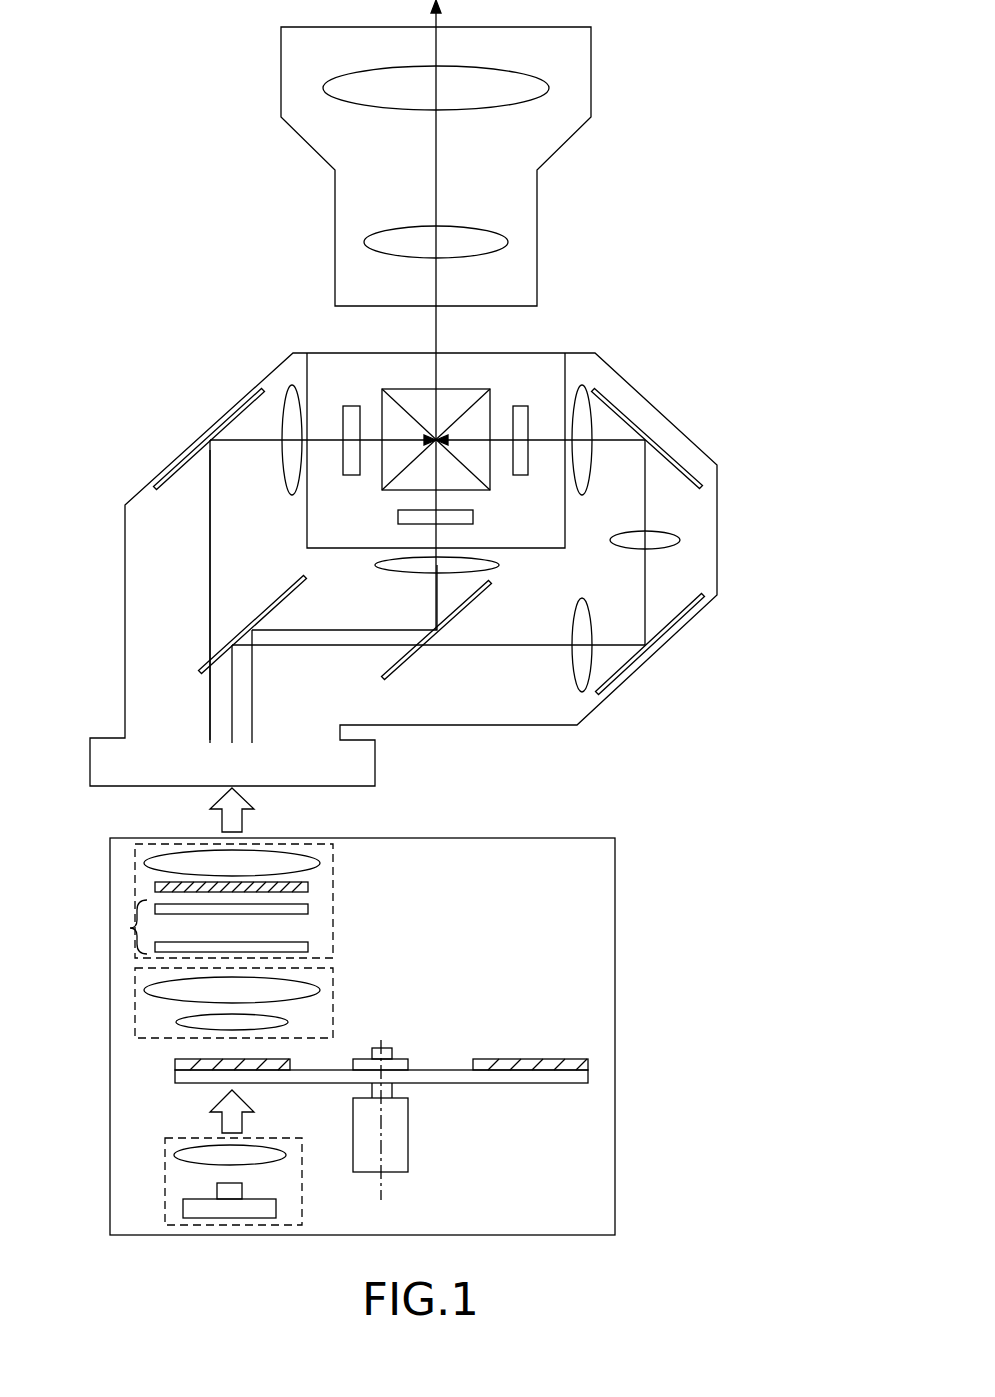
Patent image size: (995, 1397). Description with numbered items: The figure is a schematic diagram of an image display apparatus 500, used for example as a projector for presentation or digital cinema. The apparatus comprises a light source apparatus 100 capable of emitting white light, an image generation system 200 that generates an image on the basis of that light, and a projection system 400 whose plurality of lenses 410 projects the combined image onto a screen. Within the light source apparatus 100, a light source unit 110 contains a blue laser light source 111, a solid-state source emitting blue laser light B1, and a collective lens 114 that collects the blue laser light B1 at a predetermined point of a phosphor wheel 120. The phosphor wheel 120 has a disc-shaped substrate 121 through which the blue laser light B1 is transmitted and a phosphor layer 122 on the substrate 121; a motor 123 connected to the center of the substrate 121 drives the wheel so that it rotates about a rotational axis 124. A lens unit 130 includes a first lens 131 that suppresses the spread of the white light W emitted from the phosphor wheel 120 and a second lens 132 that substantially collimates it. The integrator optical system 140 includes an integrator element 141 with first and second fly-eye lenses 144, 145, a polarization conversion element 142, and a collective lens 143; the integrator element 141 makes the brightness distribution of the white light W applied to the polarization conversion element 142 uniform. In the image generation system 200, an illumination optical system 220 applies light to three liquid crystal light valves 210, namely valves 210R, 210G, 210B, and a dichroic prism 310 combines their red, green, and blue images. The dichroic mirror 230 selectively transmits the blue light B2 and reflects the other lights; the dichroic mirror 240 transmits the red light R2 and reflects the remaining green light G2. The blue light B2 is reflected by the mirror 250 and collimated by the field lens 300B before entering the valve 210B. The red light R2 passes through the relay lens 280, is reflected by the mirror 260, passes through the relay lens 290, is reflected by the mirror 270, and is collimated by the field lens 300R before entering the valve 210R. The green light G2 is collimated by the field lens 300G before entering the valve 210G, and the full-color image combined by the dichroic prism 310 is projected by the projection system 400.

The image display apparatus 500 is at (123, 86).
The projection system 400 is at (281, 148).
The lenses 410 is at (549, 88).
The image generation system 200 is at (140, 490).
The illumination optical system 220 is at (187, 598).
The mirror 250 is at (192, 445).
The mirror 270 is at (664, 450).
The dichroic mirror 230 is at (205, 668).
The dichroic mirror 240 is at (410, 657).
The mirror 260 is at (670, 640).
The field lens 300B is at (282, 465).
The field lens 300R is at (592, 470).
The field lens 300G is at (498, 566).
The relay lens 290 is at (680, 540).
The relay lens 280 is at (582, 693).
The liquid crystal light valve 210 is at (352, 404).
The liquid crystal light valve 210B is at (351, 440).
The liquid crystal light valve 210R is at (521, 406).
The liquid crystal light valve 210G is at (473, 517).
The dichroic prism 310 is at (468, 397).
The white light W is at (222, 820).
The blue light B2 is at (210, 548).
The green light G2 is at (437, 598).
The red light R2 is at (548, 645).
The blue laser light B1 is at (222, 1118).
The light source apparatus 100 is at (615, 895).
The integrator optical system 140 is at (333, 866).
The collective lens 143 is at (145, 863).
The polarization conversion element 142 is at (155, 887).
The integrator element 141 is at (130, 928).
The second fly-eye lens 145 is at (308, 908).
The first fly-eye lens 144 is at (308, 945).
The lens unit 130 is at (333, 1000).
The second lens 132 is at (145, 990).
The first lens 131 is at (177, 1022).
The phosphor wheel 120 is at (469, 1038).
The substrate 121 is at (537, 1085).
The phosphor layer 122 is at (175, 1063).
The motor 123 is at (408, 1115).
The rotational axis 124 is at (381, 1195).
The light source unit 110 is at (165, 1183).
The collective lens 114 is at (174, 1155).
The blue laser light source 111 is at (183, 1210).